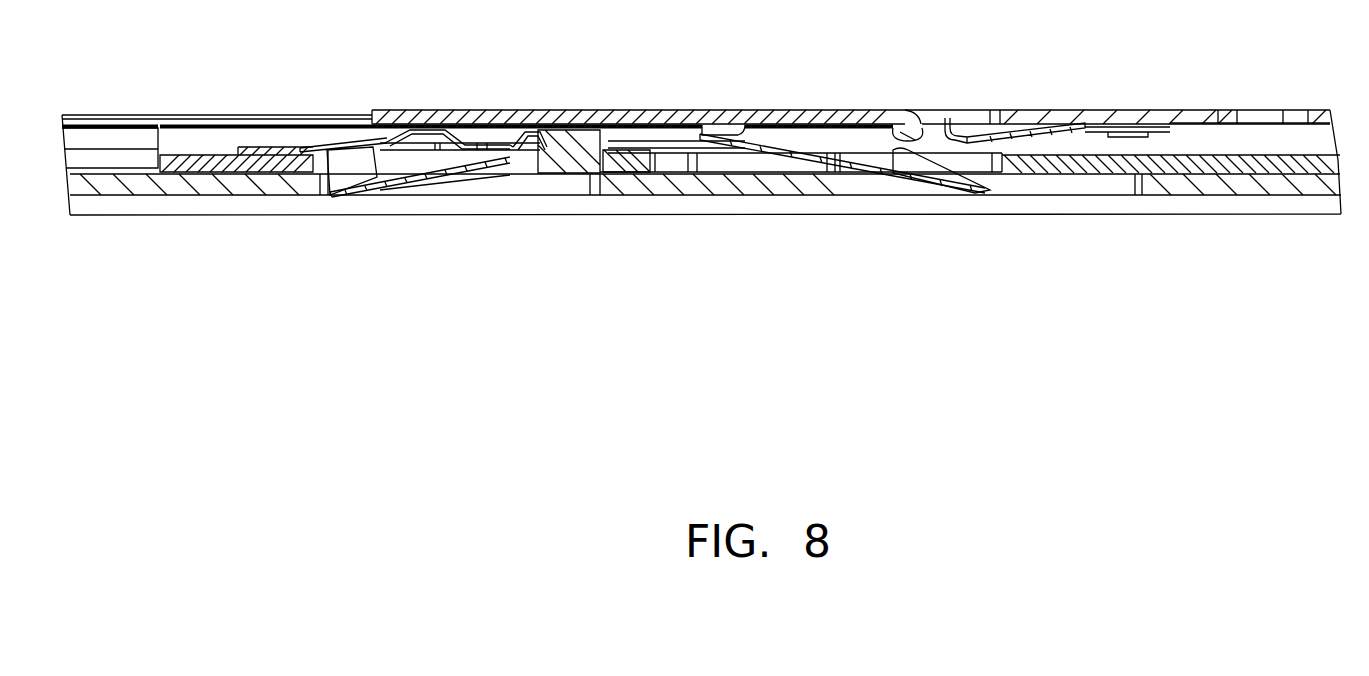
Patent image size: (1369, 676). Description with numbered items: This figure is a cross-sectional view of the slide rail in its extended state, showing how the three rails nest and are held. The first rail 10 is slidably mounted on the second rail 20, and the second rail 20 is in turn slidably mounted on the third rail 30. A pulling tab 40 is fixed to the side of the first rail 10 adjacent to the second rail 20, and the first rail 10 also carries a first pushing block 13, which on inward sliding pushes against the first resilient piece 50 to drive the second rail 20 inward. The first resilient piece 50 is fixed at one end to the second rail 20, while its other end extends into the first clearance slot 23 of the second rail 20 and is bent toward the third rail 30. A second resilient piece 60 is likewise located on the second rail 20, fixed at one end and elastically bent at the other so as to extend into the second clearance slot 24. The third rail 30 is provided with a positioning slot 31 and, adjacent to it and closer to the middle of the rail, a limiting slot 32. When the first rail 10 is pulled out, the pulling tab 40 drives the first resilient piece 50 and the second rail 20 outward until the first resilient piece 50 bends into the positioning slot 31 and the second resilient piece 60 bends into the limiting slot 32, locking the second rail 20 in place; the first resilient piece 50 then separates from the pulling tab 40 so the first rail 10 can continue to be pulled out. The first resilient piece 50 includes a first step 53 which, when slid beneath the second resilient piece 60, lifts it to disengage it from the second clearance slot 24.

The first rail 10 is at (440, 112).
The first pushing block 13 is at (725, 128).
The second rail 20 is at (210, 155).
The first clearance slot 23 is at (963, 162).
The second clearance slot 24 is at (402, 163).
The third rail 30 is at (178, 192).
The positioning slot 31 is at (1065, 193).
The limiting slot 32 is at (542, 188).
The pulling tab 40 is at (1018, 123).
The first resilient piece 50 is at (808, 160).
The first step 53 is at (443, 135).
The second resilient piece 60 is at (462, 165).